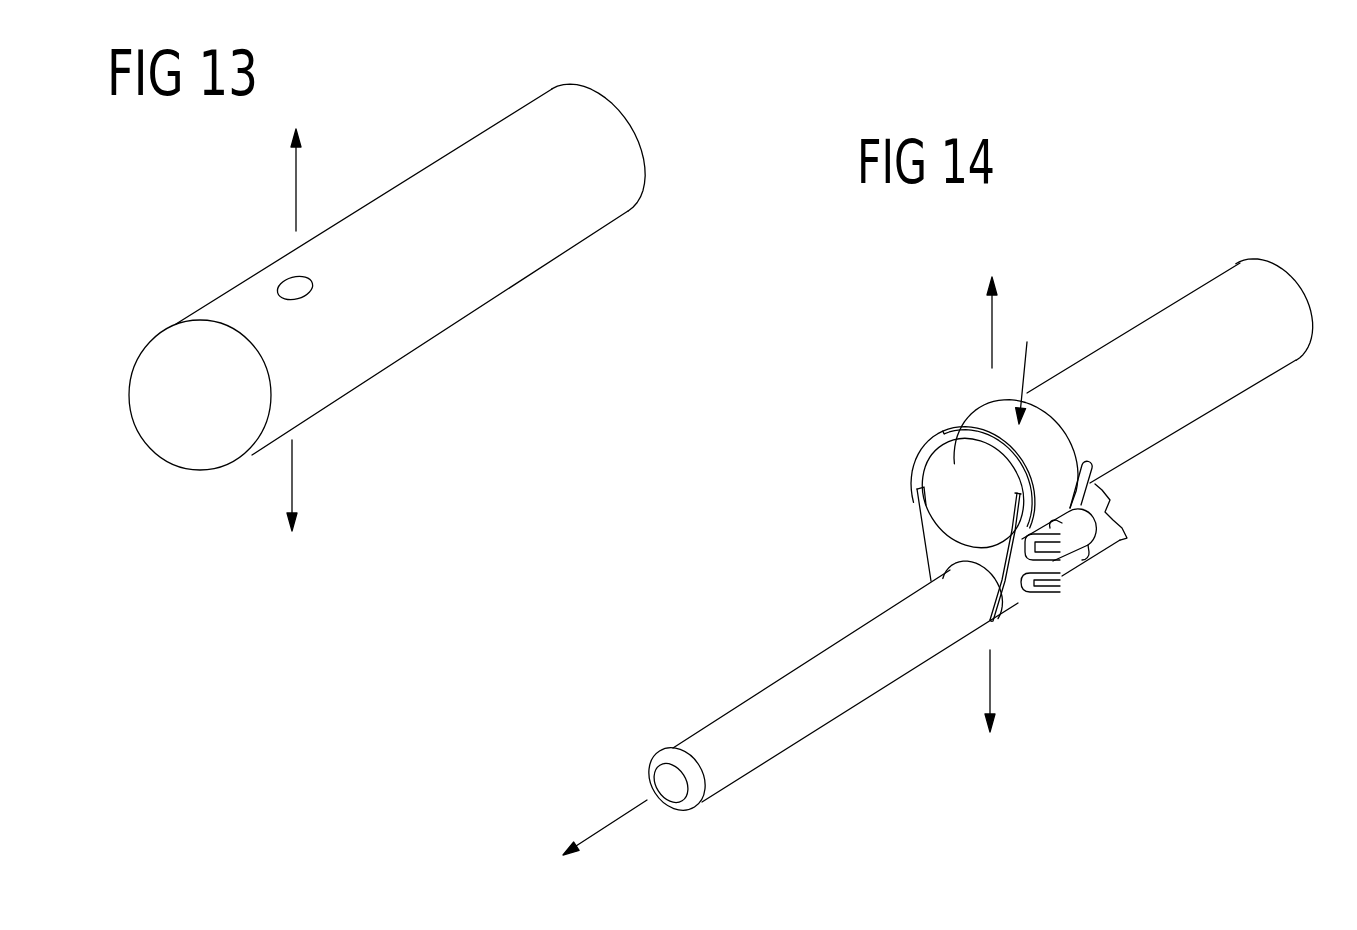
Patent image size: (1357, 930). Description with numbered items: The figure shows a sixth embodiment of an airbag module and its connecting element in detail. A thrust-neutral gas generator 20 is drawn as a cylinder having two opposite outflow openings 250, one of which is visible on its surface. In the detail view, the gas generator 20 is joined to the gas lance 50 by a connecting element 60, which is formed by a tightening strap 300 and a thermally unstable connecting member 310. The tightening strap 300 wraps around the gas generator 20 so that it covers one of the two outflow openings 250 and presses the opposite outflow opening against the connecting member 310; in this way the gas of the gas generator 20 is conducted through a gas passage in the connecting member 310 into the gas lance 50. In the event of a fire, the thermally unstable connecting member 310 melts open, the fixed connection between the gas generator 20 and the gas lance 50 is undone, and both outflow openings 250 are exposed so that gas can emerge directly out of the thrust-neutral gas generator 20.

In FIG. 13, the thrust-neutral gas generator 20 is at (485, 158).
In FIG. 14, the thrust-neutral gas generator 20 is at (1190, 307).
In FIG. 13, the outflow openings 250 is at (287, 285).
In FIG. 14, the tightening strap 300 is at (992, 415).
In FIG. 14, the connecting element 60 is at (1034, 350).
In FIG. 14, the connecting member 310 is at (933, 539).
In FIG. 14, the gas lance 50 is at (817, 695).